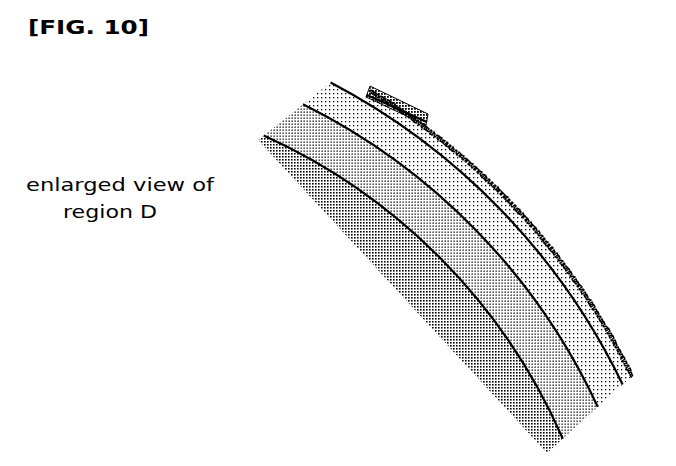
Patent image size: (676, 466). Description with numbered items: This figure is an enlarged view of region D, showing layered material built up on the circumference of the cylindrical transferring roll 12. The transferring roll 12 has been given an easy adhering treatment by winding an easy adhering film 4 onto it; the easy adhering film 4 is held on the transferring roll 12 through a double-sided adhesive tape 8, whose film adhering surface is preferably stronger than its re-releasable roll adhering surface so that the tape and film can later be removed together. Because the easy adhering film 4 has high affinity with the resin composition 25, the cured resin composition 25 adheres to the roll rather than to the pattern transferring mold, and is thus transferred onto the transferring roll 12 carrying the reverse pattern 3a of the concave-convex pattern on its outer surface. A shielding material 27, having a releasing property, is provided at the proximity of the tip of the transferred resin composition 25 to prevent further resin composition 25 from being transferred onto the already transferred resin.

The reverse pattern 3a is at (497, 188).
The easy adhering film 4 is at (322, 95).
The double-sided adhesive tape 8 is at (297, 122).
The transferring roll 12 is at (432, 320).
The resin composition 25 is at (364, 98).
The shielding material 27 is at (402, 104).